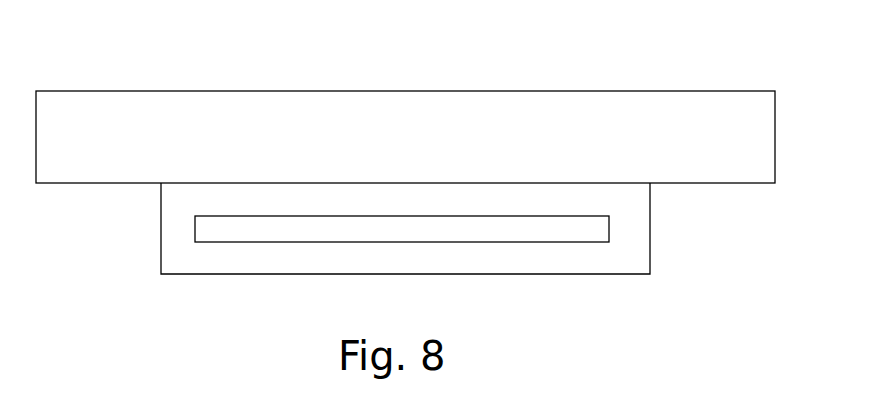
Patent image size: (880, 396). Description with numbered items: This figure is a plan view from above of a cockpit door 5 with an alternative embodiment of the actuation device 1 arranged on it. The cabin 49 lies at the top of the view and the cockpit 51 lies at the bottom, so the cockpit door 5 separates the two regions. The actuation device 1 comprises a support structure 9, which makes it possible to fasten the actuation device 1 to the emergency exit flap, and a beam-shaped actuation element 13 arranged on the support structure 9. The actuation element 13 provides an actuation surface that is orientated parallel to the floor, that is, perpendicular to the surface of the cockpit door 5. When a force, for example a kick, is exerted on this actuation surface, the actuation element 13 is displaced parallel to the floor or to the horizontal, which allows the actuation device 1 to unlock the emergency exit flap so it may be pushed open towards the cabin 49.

The cockpit door 5 is at (473, 120).
The support structure 9 is at (636, 224).
The actuation element 13 is at (258, 228).
The actuation device 1 is at (493, 243).
The cabin 49 is at (131, 62).
The cockpit 51 is at (128, 313).